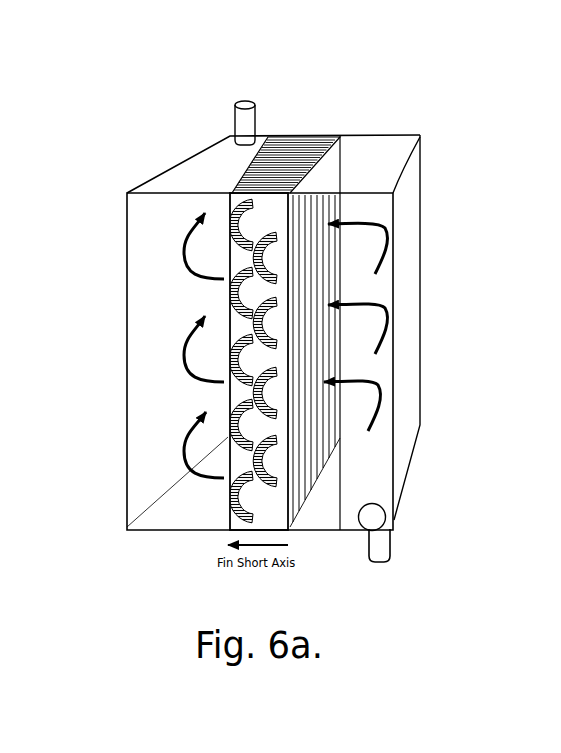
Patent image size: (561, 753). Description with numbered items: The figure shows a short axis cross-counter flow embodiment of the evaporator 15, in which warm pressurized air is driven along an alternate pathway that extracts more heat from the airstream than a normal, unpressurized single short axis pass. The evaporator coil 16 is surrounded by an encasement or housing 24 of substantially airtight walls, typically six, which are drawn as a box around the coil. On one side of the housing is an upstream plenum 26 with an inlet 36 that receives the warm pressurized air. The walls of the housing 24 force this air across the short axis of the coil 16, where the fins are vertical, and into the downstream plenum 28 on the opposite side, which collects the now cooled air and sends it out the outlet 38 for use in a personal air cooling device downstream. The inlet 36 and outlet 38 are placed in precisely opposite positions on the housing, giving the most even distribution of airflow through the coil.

The evaporator 15 is at (458, 130).
The coil 16 is at (317, 143).
The housing 24 is at (413, 248).
The upstream plenum 26 is at (375, 148).
The downstream plenum 28 is at (178, 361).
The inlet 36 is at (391, 543).
The outlet 38 is at (235, 115).